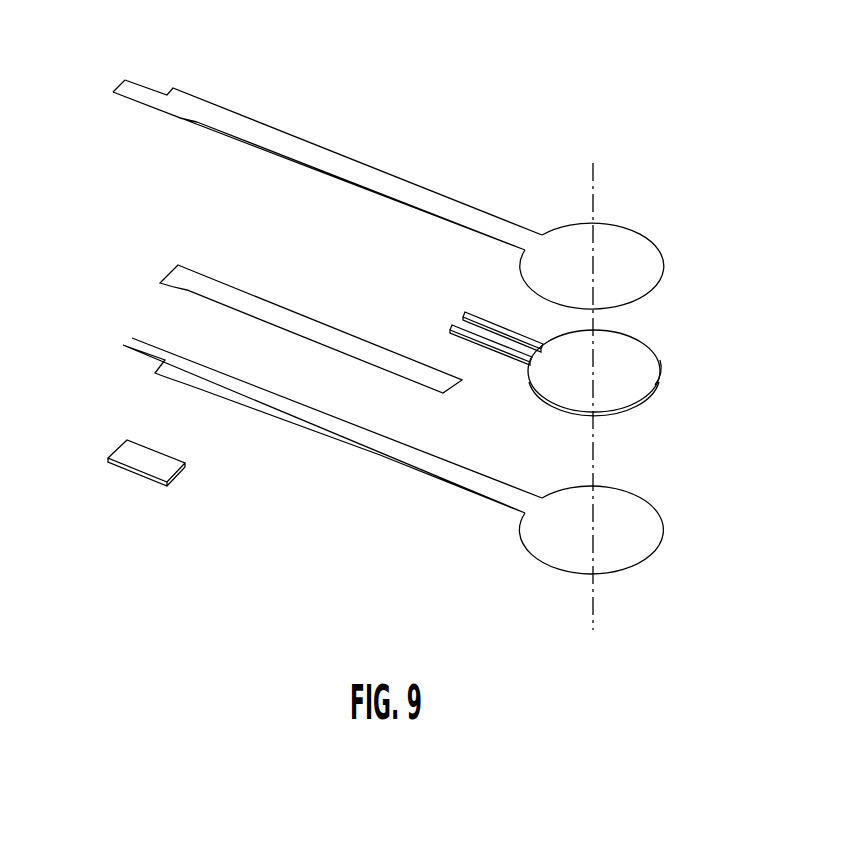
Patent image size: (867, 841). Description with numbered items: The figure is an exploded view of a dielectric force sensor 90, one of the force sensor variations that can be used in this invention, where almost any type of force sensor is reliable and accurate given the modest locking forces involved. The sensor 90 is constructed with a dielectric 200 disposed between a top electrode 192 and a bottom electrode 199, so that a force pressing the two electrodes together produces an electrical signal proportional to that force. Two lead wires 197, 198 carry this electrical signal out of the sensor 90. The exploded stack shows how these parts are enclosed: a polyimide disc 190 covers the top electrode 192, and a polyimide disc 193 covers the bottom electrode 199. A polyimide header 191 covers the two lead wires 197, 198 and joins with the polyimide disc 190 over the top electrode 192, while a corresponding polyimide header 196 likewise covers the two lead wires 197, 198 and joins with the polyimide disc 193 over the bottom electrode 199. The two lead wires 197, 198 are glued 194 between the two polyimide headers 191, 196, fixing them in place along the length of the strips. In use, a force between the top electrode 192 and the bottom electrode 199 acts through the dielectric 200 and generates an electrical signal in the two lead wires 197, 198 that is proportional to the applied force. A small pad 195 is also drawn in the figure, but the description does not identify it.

The dielectric force sensor 90 is at (497, 73).
The polyimide disc 190 is at (628, 248).
The polyimide header 191 is at (293, 148).
The top electrode 192 is at (628, 354).
The polyimide disc 193 is at (635, 518).
The glue 194 is at (292, 322).
The insulating pad 195 is at (140, 457).
The polyimide header 196 is at (337, 430).
The lead wire 197 is at (482, 343).
The lead wire 198 is at (497, 323).
The bottom electrode 199 is at (652, 401).
The dielectric 200 is at (662, 369).